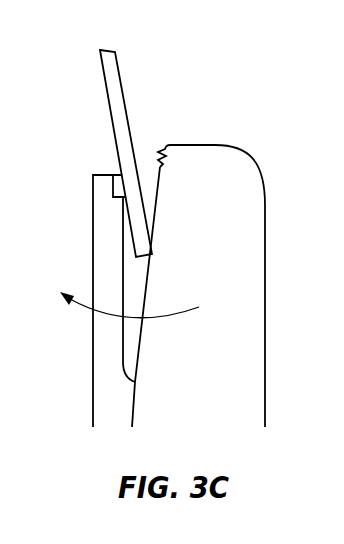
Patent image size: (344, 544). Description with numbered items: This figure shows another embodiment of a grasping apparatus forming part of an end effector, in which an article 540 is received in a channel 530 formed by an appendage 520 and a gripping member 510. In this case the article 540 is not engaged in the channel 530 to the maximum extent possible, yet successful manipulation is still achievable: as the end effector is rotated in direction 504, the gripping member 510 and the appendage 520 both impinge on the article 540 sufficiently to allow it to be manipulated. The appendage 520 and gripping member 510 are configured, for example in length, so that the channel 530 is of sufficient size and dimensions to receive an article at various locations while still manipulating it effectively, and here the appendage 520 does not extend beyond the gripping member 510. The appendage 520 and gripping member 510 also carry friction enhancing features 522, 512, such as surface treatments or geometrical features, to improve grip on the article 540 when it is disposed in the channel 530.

The direction 504 is at (155, 319).
The gripping member 510 is at (247, 160).
The friction enhancing feature 512 is at (164, 146).
The appendage 520 is at (93, 230).
The friction enhancing feature 522 is at (113, 178).
The channel 530 is at (145, 165).
The article 540 is at (118, 67).